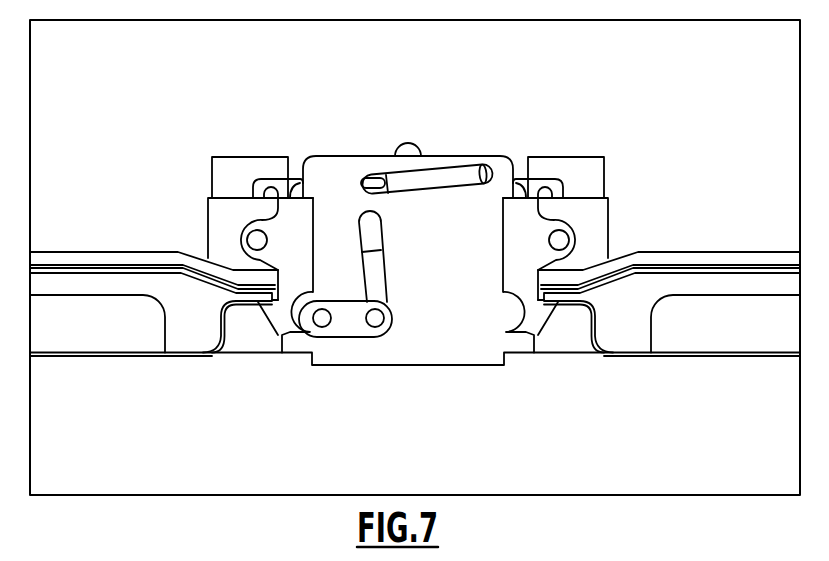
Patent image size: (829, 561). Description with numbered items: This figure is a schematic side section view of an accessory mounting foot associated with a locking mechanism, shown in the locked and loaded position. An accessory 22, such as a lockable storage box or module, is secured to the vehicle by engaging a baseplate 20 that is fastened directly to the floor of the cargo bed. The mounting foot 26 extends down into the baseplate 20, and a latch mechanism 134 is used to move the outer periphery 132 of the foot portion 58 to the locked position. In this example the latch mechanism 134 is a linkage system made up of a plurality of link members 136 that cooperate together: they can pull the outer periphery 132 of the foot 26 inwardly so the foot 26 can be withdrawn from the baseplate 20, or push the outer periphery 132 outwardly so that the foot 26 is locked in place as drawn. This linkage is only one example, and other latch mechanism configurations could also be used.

The baseplate 20 is at (760, 267).
The accessory 22 is at (708, 252).
The foot 26 is at (331, 142).
The foot portion 58 is at (524, 222).
The outer periphery 132 is at (276, 312).
The latch mechanism 134 is at (365, 357).
The link member 136 is at (340, 328).